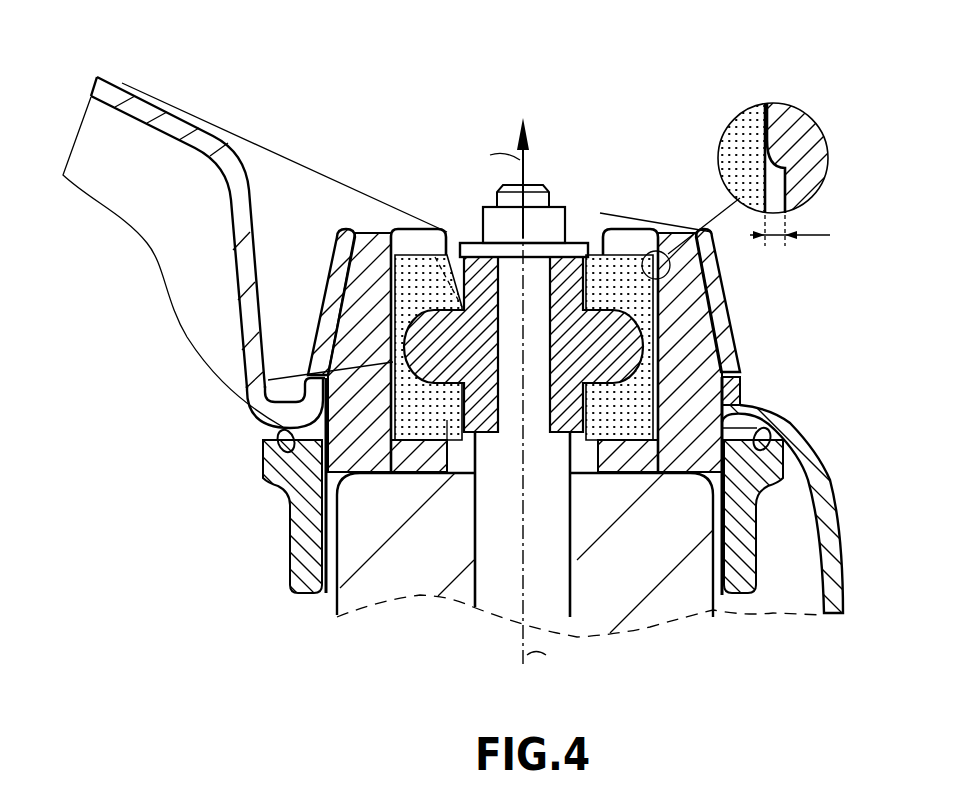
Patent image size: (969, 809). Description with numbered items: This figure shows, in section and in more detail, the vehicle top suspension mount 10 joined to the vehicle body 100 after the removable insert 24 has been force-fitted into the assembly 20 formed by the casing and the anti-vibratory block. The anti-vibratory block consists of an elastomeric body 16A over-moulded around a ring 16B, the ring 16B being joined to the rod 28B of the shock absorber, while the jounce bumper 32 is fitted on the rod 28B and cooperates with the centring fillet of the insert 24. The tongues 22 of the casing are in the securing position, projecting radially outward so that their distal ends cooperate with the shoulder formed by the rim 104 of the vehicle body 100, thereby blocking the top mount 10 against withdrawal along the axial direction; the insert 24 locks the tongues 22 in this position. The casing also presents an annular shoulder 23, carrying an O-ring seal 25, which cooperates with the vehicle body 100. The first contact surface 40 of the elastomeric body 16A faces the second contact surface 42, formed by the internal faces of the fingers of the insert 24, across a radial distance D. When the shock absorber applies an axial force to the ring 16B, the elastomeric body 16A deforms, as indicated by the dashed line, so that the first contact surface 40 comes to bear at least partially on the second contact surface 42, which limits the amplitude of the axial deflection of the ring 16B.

The vehicle top suspension mount 10 is at (377, 166).
The vehicle body 100 is at (158, 90).
The elastomeric body 16A is at (425, 273).
The ring 16B is at (567, 277).
The assembly 20 is at (521, 349).
The tongues 22 is at (340, 318).
The shoulder 23 is at (793, 422).
The removable insert 24 is at (370, 452).
The O-ring seal 25 is at (276, 436).
The rod 28B is at (497, 588).
The jounce bumper 32 is at (643, 578).
The first contact surface 40 is at (388, 278).
The second contact surface 42 is at (330, 377).
The rim 104 is at (733, 396).